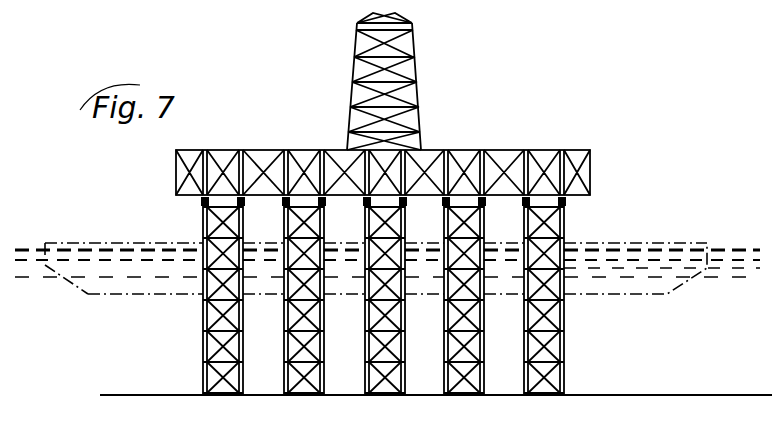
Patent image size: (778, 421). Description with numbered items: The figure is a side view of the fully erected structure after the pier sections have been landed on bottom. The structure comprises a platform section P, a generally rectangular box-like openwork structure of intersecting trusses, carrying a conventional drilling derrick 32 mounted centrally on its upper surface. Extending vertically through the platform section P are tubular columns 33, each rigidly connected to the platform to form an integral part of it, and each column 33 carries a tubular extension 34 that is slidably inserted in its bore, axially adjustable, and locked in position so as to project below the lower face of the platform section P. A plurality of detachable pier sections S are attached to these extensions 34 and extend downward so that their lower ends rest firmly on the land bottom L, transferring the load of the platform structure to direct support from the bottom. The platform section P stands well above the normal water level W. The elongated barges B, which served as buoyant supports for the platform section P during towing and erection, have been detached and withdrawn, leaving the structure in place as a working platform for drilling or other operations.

The drilling derrick 32 is at (414, 53).
The tubular column 33 is at (240, 150).
The tubular extension 34 is at (247, 201).
The platform section P is at (284, 140).
The pier section S is at (198, 227).
The water level W is at (17, 246).
The barge B is at (145, 243).
The land bottom L is at (126, 395).